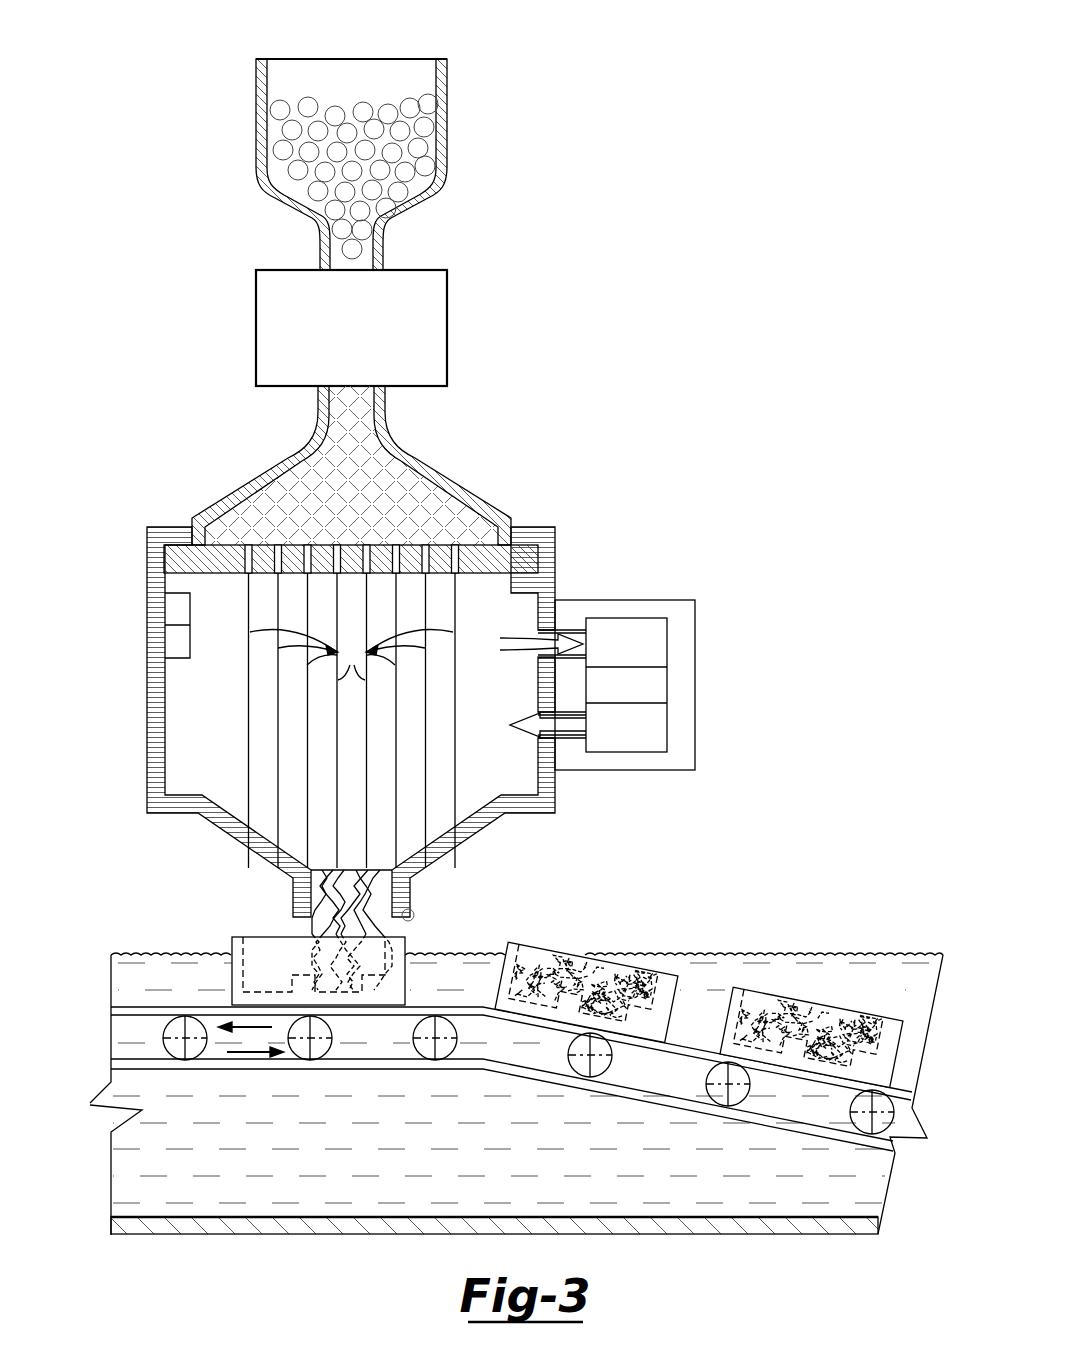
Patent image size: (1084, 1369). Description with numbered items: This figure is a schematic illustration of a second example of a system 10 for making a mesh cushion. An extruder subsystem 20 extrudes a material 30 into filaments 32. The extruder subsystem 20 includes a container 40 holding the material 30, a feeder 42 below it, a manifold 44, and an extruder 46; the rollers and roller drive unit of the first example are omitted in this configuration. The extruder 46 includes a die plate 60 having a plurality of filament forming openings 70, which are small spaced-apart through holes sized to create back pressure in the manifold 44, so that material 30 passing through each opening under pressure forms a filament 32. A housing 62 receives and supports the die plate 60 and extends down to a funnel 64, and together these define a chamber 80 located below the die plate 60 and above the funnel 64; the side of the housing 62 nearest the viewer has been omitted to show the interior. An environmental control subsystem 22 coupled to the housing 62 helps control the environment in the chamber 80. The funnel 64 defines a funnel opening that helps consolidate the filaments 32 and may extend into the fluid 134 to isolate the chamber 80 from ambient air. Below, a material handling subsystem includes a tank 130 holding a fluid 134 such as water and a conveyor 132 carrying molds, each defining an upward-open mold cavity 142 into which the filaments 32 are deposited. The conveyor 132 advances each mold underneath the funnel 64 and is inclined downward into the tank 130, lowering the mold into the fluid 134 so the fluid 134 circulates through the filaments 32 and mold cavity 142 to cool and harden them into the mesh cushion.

The system 10 is at (518, 158).
The extruder subsystem 20 is at (185, 252).
The environmental control subsystem 22 is at (697, 598).
The material 30 is at (378, 115).
The filaments 32 is at (352, 720).
The container 40 is at (337, 98).
The feeder 42 is at (340, 343).
The manifold 44 is at (442, 478).
The extruder 46 is at (173, 525).
The die plate 60 is at (492, 556).
The housing 62 is at (557, 562).
The funnel 64 is at (411, 888).
The filament forming openings 70 is at (332, 541).
The chamber 80 is at (478, 626).
The tank 130 is at (413, 1235).
The conveyor 132 is at (170, 1070).
The fluid 134 is at (175, 953).
The mold cavity 142 is at (280, 955).